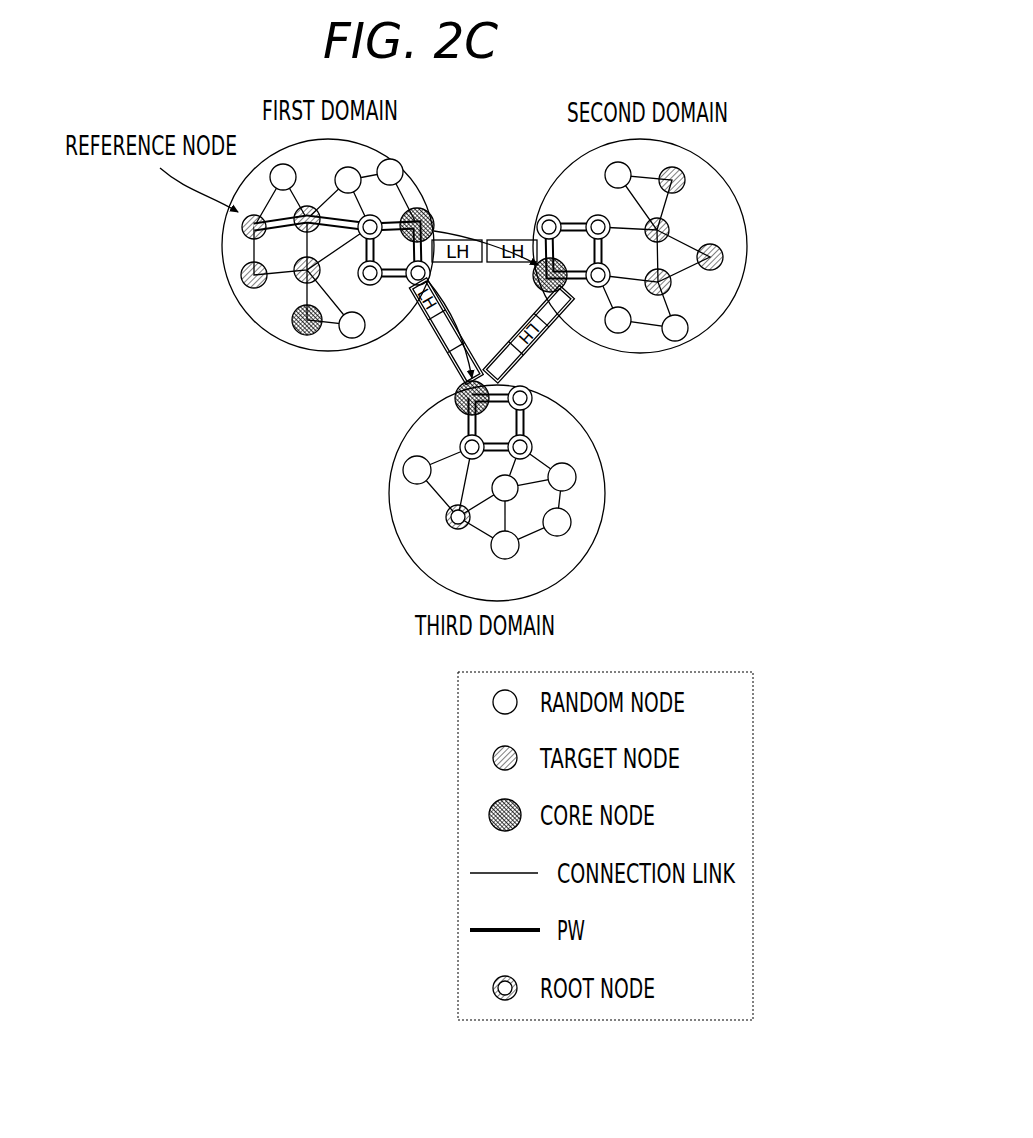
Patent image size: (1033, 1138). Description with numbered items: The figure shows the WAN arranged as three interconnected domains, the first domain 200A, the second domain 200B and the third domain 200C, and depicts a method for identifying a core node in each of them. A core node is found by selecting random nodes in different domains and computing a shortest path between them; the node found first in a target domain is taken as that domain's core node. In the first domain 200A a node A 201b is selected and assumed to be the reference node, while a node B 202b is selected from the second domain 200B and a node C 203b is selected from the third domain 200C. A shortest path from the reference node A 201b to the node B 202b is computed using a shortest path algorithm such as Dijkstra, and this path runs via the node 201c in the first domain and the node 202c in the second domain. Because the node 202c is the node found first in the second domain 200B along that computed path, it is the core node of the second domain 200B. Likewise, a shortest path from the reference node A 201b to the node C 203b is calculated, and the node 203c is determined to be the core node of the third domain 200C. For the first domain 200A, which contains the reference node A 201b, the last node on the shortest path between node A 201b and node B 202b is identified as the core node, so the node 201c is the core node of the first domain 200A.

The first domain 200A is at (390, 160).
The second domain 200B is at (715, 163).
The third domain 200C is at (603, 467).
The reference node A 201b is at (243, 232).
The core node of the first domain 201c is at (433, 212).
The node B 202b is at (669, 228).
The core node of the second domain 202c is at (562, 288).
The node C 203b is at (446, 517).
The core node of the third domain 203c is at (455, 398).